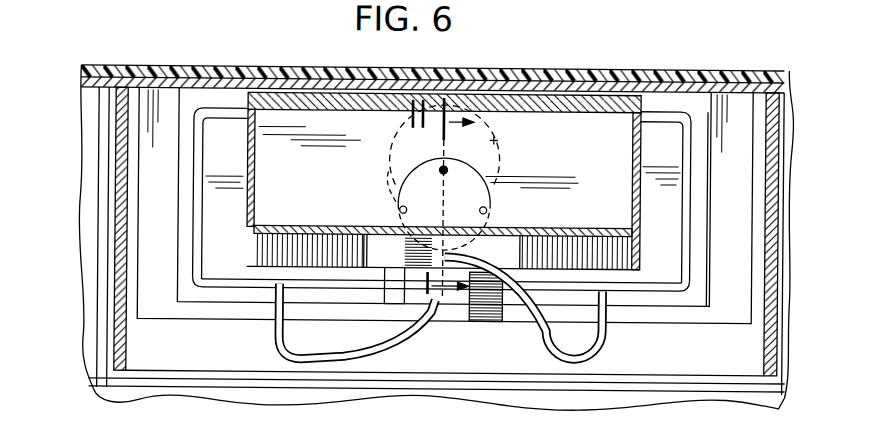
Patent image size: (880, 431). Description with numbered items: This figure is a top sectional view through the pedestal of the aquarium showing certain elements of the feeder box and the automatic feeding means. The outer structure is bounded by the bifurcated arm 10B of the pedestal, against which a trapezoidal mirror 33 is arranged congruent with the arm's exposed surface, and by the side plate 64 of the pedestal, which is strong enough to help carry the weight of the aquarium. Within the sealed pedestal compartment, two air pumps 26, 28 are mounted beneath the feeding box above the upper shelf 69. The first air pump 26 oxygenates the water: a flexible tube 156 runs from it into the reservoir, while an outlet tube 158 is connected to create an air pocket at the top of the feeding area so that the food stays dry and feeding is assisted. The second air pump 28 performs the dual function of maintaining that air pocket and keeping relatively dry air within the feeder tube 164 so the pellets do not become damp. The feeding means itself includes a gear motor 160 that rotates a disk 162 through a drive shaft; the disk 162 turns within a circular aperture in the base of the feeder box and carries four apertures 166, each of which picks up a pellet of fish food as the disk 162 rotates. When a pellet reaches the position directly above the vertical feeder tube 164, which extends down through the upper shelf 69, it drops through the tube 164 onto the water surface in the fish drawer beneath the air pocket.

The bifurcated arm 10B is at (690, 89).
The mirror 33 is at (254, 72).
The side plate 64 is at (120, 252).
The air pump 26 is at (213, 252).
The air pump 28 is at (445, 226).
The disk 162 is at (378, 206).
The feeder tube 164 is at (440, 262).
The gear motor 160 is at (498, 142).
The apertures 166 is at (440, 168).
The flexible tube 156 is at (398, 330).
The outlet tube 158 is at (540, 332).
The upper shelf 69 is at (197, 365).